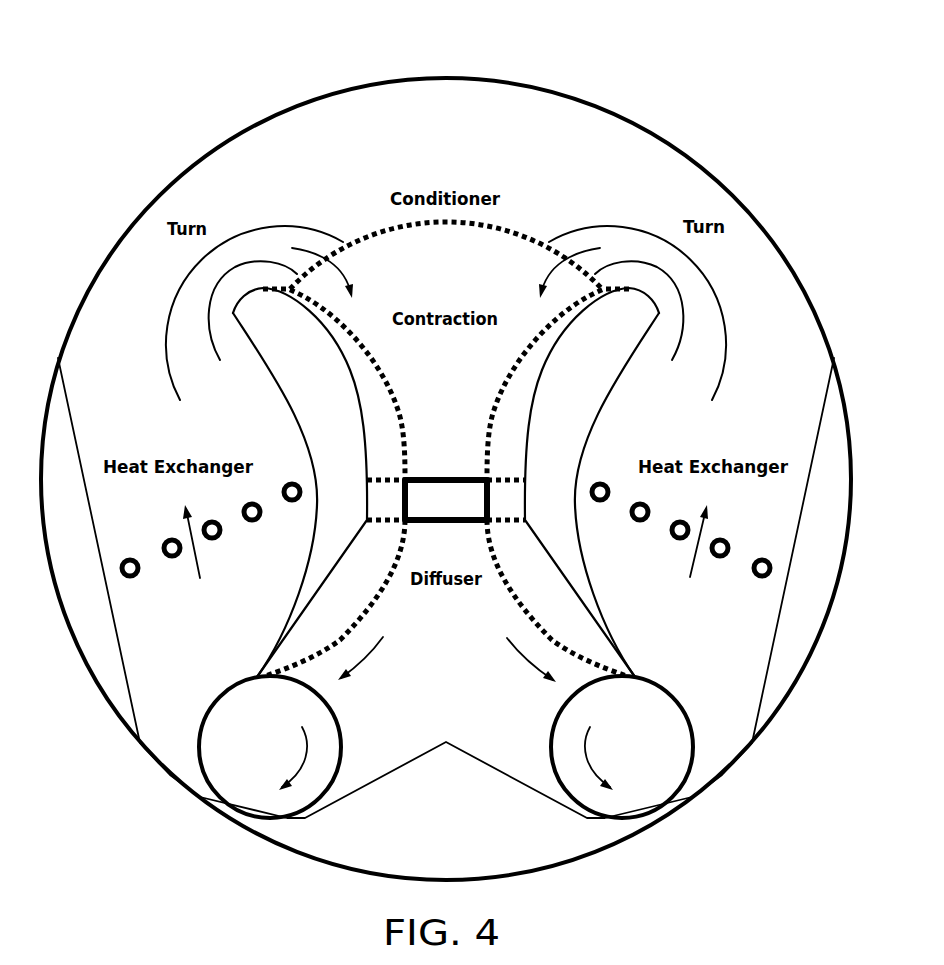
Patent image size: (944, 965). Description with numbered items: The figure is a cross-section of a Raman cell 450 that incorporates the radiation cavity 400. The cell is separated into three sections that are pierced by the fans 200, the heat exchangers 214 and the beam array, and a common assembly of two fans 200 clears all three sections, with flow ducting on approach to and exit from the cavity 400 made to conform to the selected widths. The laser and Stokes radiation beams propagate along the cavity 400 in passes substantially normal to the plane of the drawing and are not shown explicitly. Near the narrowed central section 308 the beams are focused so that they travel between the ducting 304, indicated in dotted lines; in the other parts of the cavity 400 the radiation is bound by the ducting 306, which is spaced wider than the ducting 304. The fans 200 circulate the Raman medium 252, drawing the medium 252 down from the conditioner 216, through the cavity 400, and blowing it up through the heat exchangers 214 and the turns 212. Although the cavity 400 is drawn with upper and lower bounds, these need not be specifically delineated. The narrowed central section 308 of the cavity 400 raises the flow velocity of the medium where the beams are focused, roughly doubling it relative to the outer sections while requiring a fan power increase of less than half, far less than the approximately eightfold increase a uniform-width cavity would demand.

The fan 200 is at (290, 758).
The turn 212 is at (165, 360).
The heat exchanger 214 is at (251, 544).
The conditioner 216 is at (510, 232).
The Raman medium 252 is at (549, 265).
The ducting 304 is at (372, 605).
The ducting 306 is at (363, 447).
The central section 308 is at (437, 477).
The cavity 400 is at (383, 501).
The Raman cell 450 is at (696, 118).